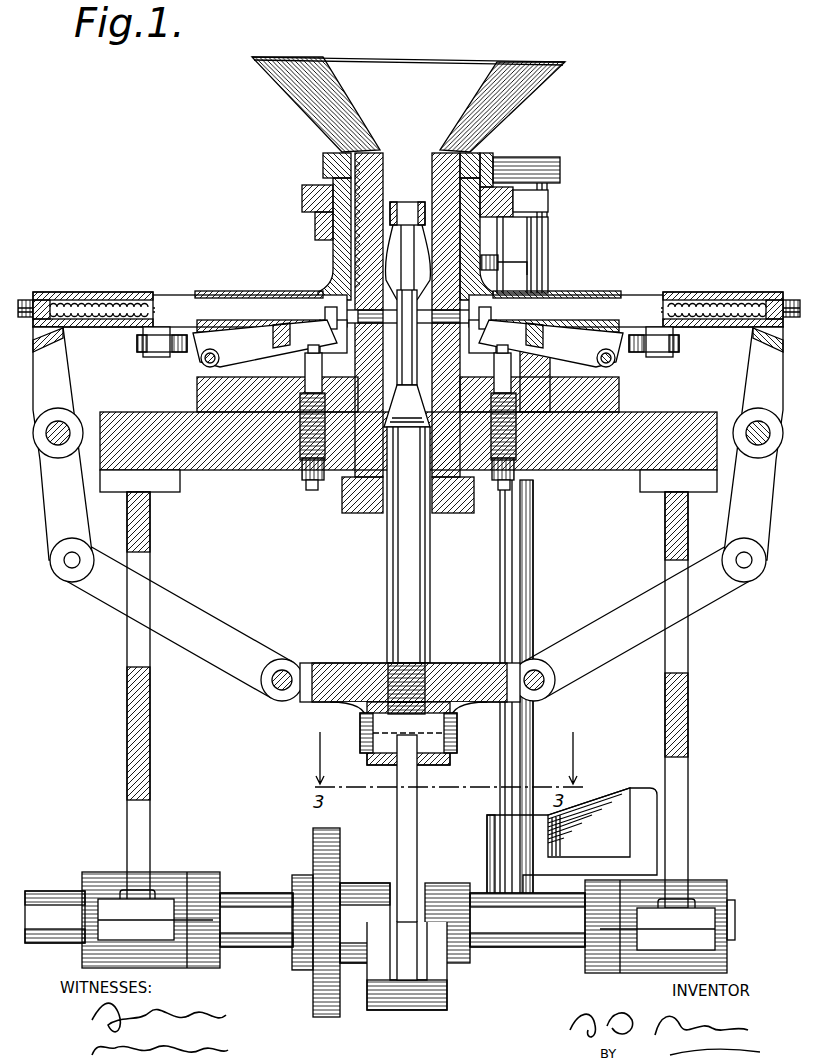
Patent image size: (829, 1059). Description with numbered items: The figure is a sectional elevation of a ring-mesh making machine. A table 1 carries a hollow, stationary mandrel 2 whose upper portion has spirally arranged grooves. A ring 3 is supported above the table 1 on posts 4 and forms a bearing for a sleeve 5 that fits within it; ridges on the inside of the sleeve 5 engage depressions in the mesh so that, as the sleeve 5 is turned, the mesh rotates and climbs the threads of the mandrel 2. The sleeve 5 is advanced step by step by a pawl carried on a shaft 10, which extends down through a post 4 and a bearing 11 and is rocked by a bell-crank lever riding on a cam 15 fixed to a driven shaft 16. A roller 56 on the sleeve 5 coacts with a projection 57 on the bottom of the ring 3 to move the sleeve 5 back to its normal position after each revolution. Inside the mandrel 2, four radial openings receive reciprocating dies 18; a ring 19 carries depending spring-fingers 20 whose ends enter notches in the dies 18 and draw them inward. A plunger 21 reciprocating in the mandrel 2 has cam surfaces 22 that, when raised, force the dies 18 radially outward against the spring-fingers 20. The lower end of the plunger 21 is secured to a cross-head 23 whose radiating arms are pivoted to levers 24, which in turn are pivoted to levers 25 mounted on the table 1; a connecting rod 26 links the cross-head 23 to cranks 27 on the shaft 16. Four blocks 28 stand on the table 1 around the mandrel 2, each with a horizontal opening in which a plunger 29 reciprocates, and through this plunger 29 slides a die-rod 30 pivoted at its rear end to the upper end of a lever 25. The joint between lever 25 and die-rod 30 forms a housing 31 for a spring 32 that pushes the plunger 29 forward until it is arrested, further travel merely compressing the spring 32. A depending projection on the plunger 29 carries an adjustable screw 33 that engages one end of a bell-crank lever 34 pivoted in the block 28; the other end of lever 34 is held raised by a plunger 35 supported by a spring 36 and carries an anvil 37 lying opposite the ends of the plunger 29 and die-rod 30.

The table 1 is at (244, 464).
The mandrel 2 is at (340, 276).
The ring 3 is at (302, 192).
The posts 4 is at (545, 252).
The sleeve 5 is at (315, 232).
The shaft 10 is at (523, 166).
The bearing 11 is at (503, 855).
The cam 15 is at (328, 1017).
The shaft 16 is at (264, 942).
The reciprocating dies 18 is at (410, 337).
The ring 19 is at (403, 205).
The spring-fingers 20 is at (407, 262).
The plunger 21 is at (408, 545).
The cam surfaces 22 is at (407, 406).
The cross-head 23 is at (339, 658).
The levers 24 is at (203, 624).
The levers 25 is at (66, 384).
The connecting rod 26 is at (400, 833).
The cranks 27 is at (440, 975).
The blocks 28 is at (197, 393).
The plunger 29 is at (206, 300).
The die-rod 30 is at (142, 302).
The housing 31 is at (83, 297).
The spring 32 is at (126, 297).
The adjustable screw 33 is at (160, 348).
The bell-crank lever 34 is at (204, 352).
The plunger 35 is at (322, 362).
The spring 36 is at (293, 473).
The anvil 37 is at (322, 313).
The roller 56 is at (514, 269).
The projection 57 is at (498, 258).